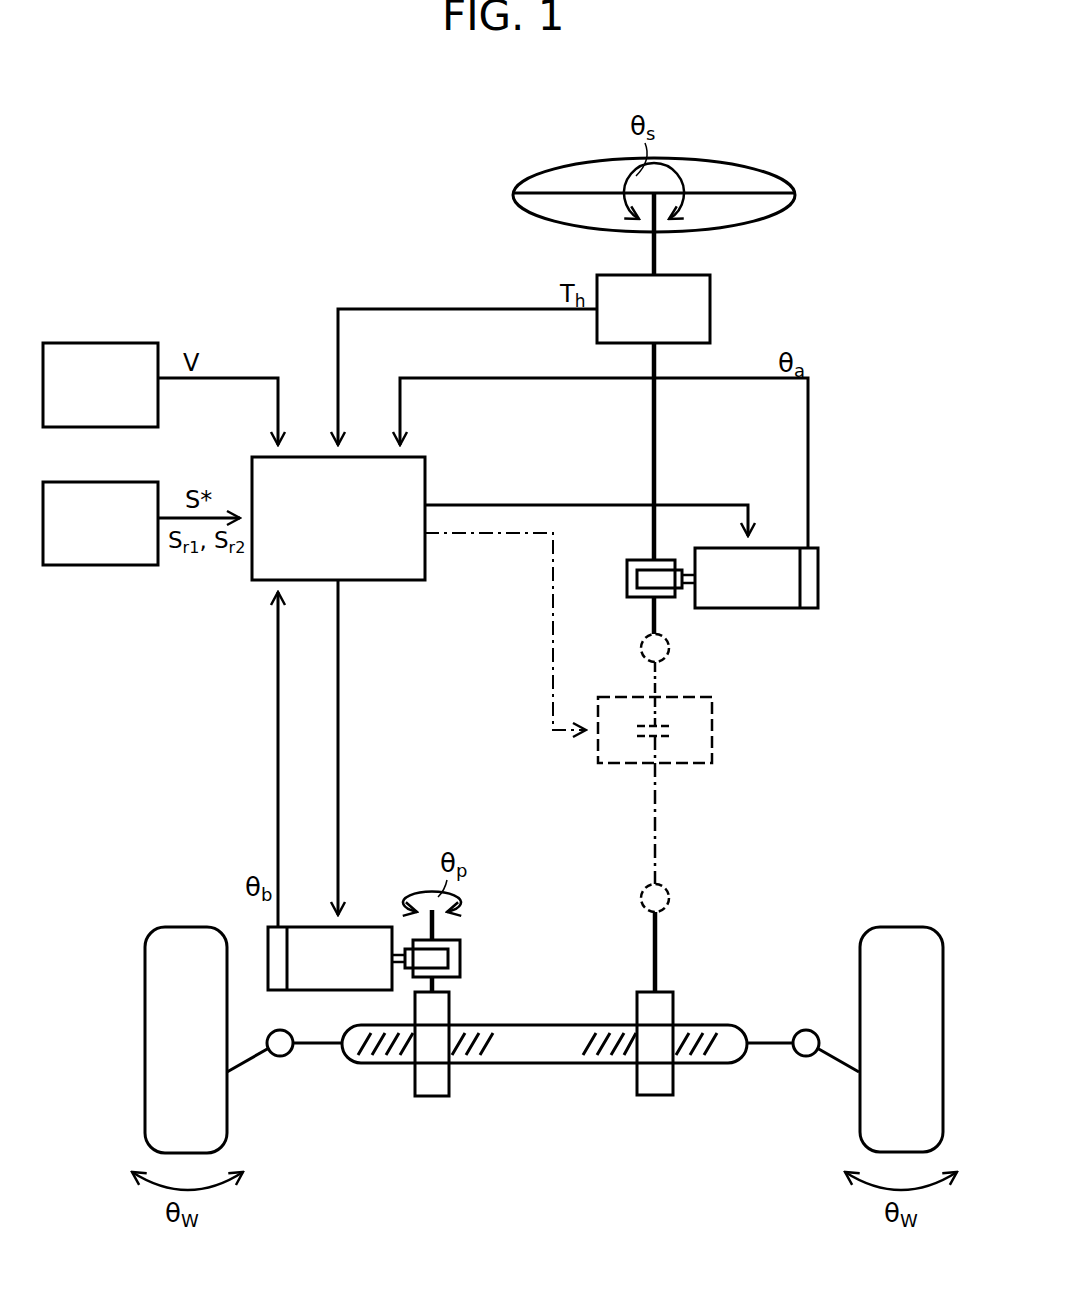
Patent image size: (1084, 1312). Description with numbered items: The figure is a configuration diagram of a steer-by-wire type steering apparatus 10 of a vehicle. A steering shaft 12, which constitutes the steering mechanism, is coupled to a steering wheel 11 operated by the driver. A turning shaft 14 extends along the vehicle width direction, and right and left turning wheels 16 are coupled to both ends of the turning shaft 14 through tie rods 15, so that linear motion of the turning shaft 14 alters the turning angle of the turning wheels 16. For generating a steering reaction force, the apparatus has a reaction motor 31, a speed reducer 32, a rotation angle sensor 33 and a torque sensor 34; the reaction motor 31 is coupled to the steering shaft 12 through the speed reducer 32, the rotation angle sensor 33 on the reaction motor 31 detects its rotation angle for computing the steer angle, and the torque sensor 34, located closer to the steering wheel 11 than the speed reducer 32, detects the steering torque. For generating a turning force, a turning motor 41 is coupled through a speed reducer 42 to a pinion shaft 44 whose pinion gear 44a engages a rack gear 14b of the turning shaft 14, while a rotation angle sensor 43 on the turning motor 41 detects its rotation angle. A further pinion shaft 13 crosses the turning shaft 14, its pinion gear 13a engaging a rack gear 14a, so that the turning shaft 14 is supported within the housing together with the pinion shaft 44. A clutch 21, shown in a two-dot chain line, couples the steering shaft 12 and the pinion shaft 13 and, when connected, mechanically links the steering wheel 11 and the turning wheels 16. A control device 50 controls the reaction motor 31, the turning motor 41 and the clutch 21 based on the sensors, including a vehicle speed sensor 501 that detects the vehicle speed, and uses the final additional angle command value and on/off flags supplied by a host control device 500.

The steering apparatus 10 is at (818, 166).
The steering wheel 11 is at (733, 162).
The steering shaft 12 is at (658, 250).
The pinion shaft 13 is at (652, 958).
The pinion gear 13a is at (656, 1096).
The turning shaft 14 is at (540, 1065).
The rack gear 14a is at (608, 1052).
The rack gear 14b is at (462, 1052).
The tie rod 15 is at (311, 1050).
The turning wheel 16 is at (230, 1120).
The clutch 21 is at (713, 735).
The reaction motor 31 is at (768, 610).
The speed reducer 32 is at (624, 572).
The rotation angle sensor 33 is at (805, 610).
The torque sensor 34 is at (712, 305).
The turning motor 41 is at (371, 926).
The speed reducer 42 is at (467, 969).
The rotation angle sensor 43 is at (266, 975).
The pinion shaft 44 is at (437, 924).
The pinion gear 44a is at (432, 1097).
The control device 50 is at (422, 582).
The host control device 500 is at (97, 482).
The vehicle speed sensor 501 is at (97, 343).